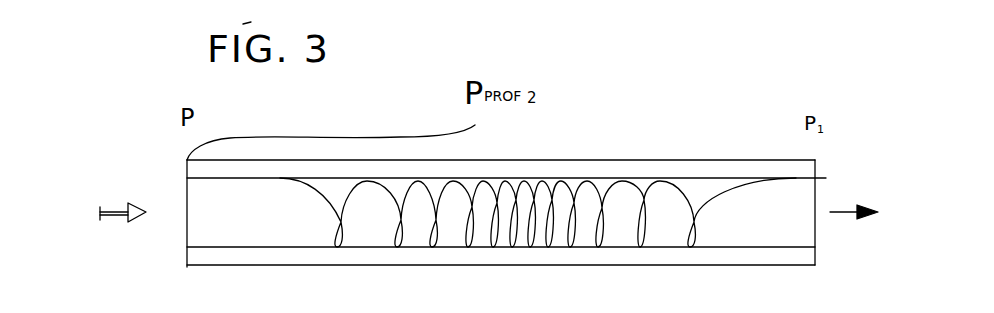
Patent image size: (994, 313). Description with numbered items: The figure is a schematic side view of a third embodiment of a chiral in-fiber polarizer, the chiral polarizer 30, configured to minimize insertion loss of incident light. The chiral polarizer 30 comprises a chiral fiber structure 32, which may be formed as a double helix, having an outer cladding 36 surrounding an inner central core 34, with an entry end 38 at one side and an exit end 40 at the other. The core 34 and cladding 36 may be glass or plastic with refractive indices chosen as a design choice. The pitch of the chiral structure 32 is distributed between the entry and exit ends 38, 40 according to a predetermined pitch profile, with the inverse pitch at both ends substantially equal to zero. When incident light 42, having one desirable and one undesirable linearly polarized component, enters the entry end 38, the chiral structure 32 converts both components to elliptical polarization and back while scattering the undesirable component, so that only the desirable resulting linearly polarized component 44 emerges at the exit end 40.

The chiral polarizer 30 is at (610, 105).
The chiral fiber structure 32 is at (715, 165).
The inner central core 34 is at (203, 230).
The outer cladding 36 is at (195, 170).
The entry end 38 is at (186, 207).
The exit end 40 is at (815, 230).
The incident light 42 is at (108, 216).
The desirable resulting linearly polarized component 44 is at (843, 207).